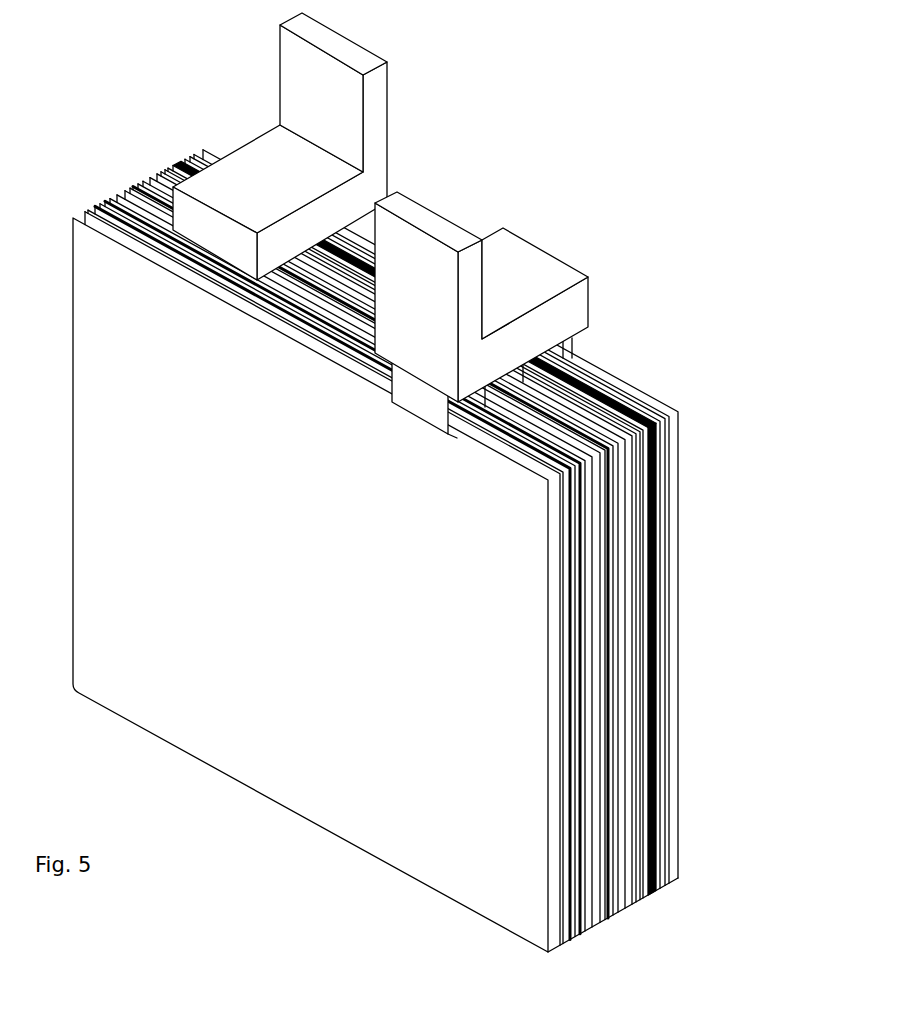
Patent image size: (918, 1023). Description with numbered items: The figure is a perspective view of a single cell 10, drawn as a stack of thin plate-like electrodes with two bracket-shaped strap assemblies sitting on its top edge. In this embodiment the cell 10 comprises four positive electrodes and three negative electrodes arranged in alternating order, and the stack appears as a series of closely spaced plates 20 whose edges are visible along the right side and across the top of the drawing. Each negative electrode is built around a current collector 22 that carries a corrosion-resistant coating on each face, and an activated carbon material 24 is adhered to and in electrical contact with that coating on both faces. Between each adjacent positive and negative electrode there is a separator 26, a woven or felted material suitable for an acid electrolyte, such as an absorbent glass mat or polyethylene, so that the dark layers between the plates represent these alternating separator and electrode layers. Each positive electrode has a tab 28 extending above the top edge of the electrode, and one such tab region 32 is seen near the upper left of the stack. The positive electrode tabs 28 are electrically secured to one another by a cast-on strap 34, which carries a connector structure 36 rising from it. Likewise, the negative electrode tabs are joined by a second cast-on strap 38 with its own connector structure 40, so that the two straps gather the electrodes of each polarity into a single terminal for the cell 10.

The cell 10 is at (642, 146).
The electrode plate 20 is at (672, 570).
The current collector 22 is at (647, 408).
The activated carbon material 24 is at (657, 445).
The separator 26 is at (663, 680).
The tab 28 is at (405, 399).
The electrode tab 32 is at (158, 168).
The cast-on strap 34 is at (567, 318).
The connector structure 36 is at (438, 230).
The cast-on strap 38 is at (286, 167).
The connector structure 40 is at (318, 40).